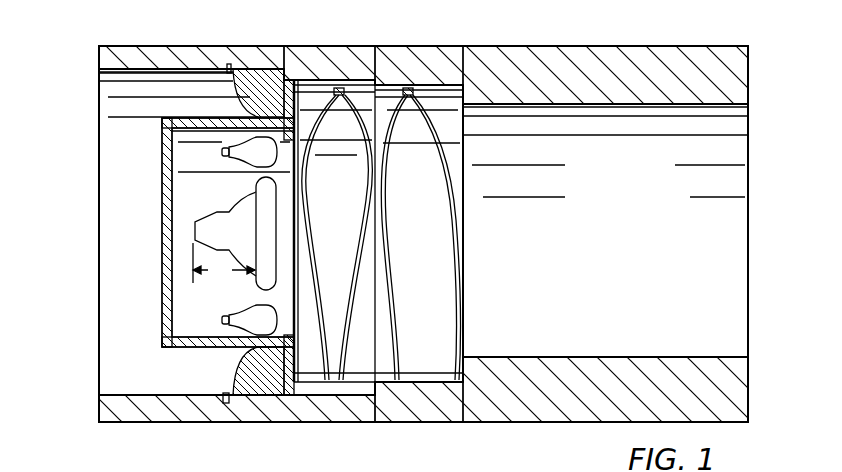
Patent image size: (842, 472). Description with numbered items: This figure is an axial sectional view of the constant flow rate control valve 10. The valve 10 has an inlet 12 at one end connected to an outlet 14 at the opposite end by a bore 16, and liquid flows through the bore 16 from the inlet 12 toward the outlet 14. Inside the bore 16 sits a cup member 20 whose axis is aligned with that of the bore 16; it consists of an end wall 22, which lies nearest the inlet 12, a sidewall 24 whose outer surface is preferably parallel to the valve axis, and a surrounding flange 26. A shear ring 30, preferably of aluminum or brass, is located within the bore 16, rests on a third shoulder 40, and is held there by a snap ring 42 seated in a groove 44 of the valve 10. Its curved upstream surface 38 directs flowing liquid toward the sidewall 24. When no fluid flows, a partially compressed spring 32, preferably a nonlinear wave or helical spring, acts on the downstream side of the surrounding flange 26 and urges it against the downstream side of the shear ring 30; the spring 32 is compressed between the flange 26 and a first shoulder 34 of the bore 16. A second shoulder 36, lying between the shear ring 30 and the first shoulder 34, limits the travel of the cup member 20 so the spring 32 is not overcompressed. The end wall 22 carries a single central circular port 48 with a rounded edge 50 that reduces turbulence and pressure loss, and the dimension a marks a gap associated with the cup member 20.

The constant flow rate control valve 10 is at (560, 46).
The inlet 12 is at (99, 80).
The outlet 14 is at (748, 133).
The bore 16 is at (647, 253).
The cup member 20 is at (161, 319).
The end wall 22 is at (166, 163).
The sidewall 24 is at (184, 117).
The surrounding flange 26 is at (298, 112).
The shear ring 30 is at (256, 398).
The spring 32 is at (341, 91).
The first shoulder 34 is at (408, 91).
The second shoulder 36 is at (375, 388).
The curved upstream surface 38 is at (253, 380).
The third shoulder 40 is at (280, 68).
The snap ring 42 is at (188, 68).
The groove 44 is at (228, 65).
The circular port 48 is at (166, 217).
The rounded edge 50 is at (166, 275).
The gap dimension a is at (224, 263).